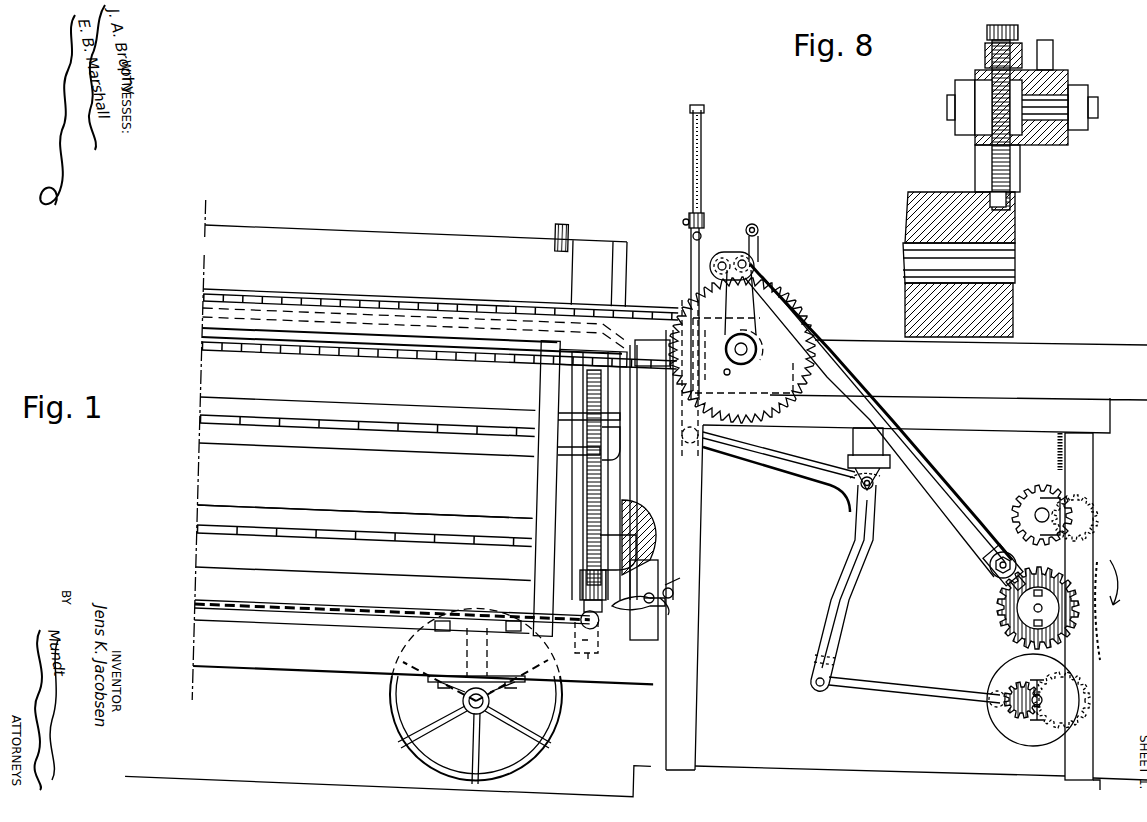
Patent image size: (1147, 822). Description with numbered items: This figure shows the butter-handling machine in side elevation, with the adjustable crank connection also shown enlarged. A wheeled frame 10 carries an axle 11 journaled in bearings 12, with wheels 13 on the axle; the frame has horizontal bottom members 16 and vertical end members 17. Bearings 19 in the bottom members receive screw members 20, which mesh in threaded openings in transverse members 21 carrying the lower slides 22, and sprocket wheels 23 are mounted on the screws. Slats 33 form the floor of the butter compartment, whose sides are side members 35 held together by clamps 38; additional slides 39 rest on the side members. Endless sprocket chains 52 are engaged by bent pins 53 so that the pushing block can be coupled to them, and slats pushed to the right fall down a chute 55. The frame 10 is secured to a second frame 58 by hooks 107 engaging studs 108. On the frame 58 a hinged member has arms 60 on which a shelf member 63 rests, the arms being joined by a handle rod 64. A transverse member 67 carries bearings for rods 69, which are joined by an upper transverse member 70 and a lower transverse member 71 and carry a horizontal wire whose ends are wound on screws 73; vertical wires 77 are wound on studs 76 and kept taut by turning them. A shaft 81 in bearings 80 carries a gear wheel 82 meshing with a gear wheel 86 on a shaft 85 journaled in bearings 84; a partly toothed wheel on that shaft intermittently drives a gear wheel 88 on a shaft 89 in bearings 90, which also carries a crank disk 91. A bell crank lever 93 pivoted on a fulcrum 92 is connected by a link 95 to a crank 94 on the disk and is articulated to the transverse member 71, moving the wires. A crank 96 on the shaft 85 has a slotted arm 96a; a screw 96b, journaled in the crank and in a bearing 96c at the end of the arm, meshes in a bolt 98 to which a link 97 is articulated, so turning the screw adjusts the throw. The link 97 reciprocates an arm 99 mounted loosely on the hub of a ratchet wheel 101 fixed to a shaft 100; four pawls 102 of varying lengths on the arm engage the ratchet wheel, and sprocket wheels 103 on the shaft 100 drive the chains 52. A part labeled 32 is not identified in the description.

In FIG. 1, the frame 10 is at (422, 689).
In FIG. 1, the axle 11 is at (476, 696).
In FIG. 1, the bearings 12 is at (483, 715).
In FIG. 1, the wheels 13 is at (424, 722).
In FIG. 1, the horizontal bottom members 16 is at (362, 641).
In FIG. 1, the vertical end members 17 is at (544, 482).
In FIG. 1, the bearings 19 is at (592, 653).
In FIG. 1, the screw members 20 is at (587, 562).
In FIG. 1, the transverse members 21 is at (624, 604).
In FIG. 1, the lower slides 22 is at (364, 536).
In FIG. 1, the sprocket wheels 23 is at (579, 591).
In FIG. 1, the drive chain 32 is at (376, 608).
In FIG. 1, the slats 33 is at (410, 314).
In FIG. 1, the side members 35 is at (412, 373).
In FIG. 1, the clamps 38 is at (568, 220).
In FIG. 1, the slides 39 is at (496, 343).
In FIG. 1, the endless sprocket chains 52 is at (628, 298).
In FIG. 1, the bent pins 53 is at (921, 565).
In FIG. 1, the chute 55 is at (644, 520).
In FIG. 1, the frame 58 is at (690, 700).
In FIG. 1, the arms 60 is at (760, 246).
In FIG. 1, the shelf member 63 is at (751, 223).
In FIG. 1, the handle rod 64 is at (758, 227).
In FIG. 1, the transverse member 67 is at (703, 216).
In FIG. 1, the rods 69 is at (709, 151).
In FIG. 1, the transverse member 70 is at (704, 107).
In FIG. 1, the transverse member 71 is at (688, 385).
In FIG. 1, the screws 73 is at (701, 237).
In FIG. 1, the studs 76 is at (683, 221).
In FIG. 1, the vertical wires 77 is at (691, 252).
In FIG. 1, the bearings 80 is at (1050, 514).
In FIG. 1, the shaft 81 is at (1028, 500).
In FIG. 1, the gear wheel 82 is at (1058, 455).
In FIG. 1, the bearings 84 is at (1052, 560).
In FIG. 1, the shaft 85 is at (1046, 606).
In FIG. 8, the shaft 85 is at (1012, 262).
In FIG. 1, the gear wheel 86 is at (1107, 610).
In FIG. 1, the gear wheel 88 is at (1008, 732).
In FIG. 1, the shaft 89 is at (1044, 698).
In FIG. 1, the bearings 90 is at (1066, 716).
In FIG. 1, the crank disk 91 is at (1000, 714).
In FIG. 1, the fulcrum 92 is at (872, 486).
In FIG. 1, the bell crank lever 93 is at (850, 588).
In FIG. 1, the crank 94 is at (993, 690).
In FIG. 1, the link 95 is at (905, 698).
In FIG. 1, the crank 96 is at (996, 606).
In FIG. 8, the crank 96 is at (1010, 224).
In FIG. 8, the slotted arm 96a is at (1020, 186).
In FIG. 8, the screw 96b is at (1012, 166).
In FIG. 8, the bearing 96c is at (985, 58).
In FIG. 1, the link 97 is at (940, 500).
In FIG. 8, the link 97 is at (1052, 64).
In FIG. 1, the bolt 98 is at (990, 570).
In FIG. 8, the bolt 98 is at (1072, 88).
In FIG. 1, the arm 99 is at (727, 304).
In FIG. 1, the shaft 100 is at (790, 305).
In FIG. 1, the ratchet wheel 101 is at (790, 368).
In FIG. 1, the pawls 102 is at (722, 258).
In FIG. 1, the sprocket wheels 103 is at (758, 350).
In FIG. 1, the hooks 107 is at (676, 588).
In FIG. 1, the studs 108 is at (670, 612).